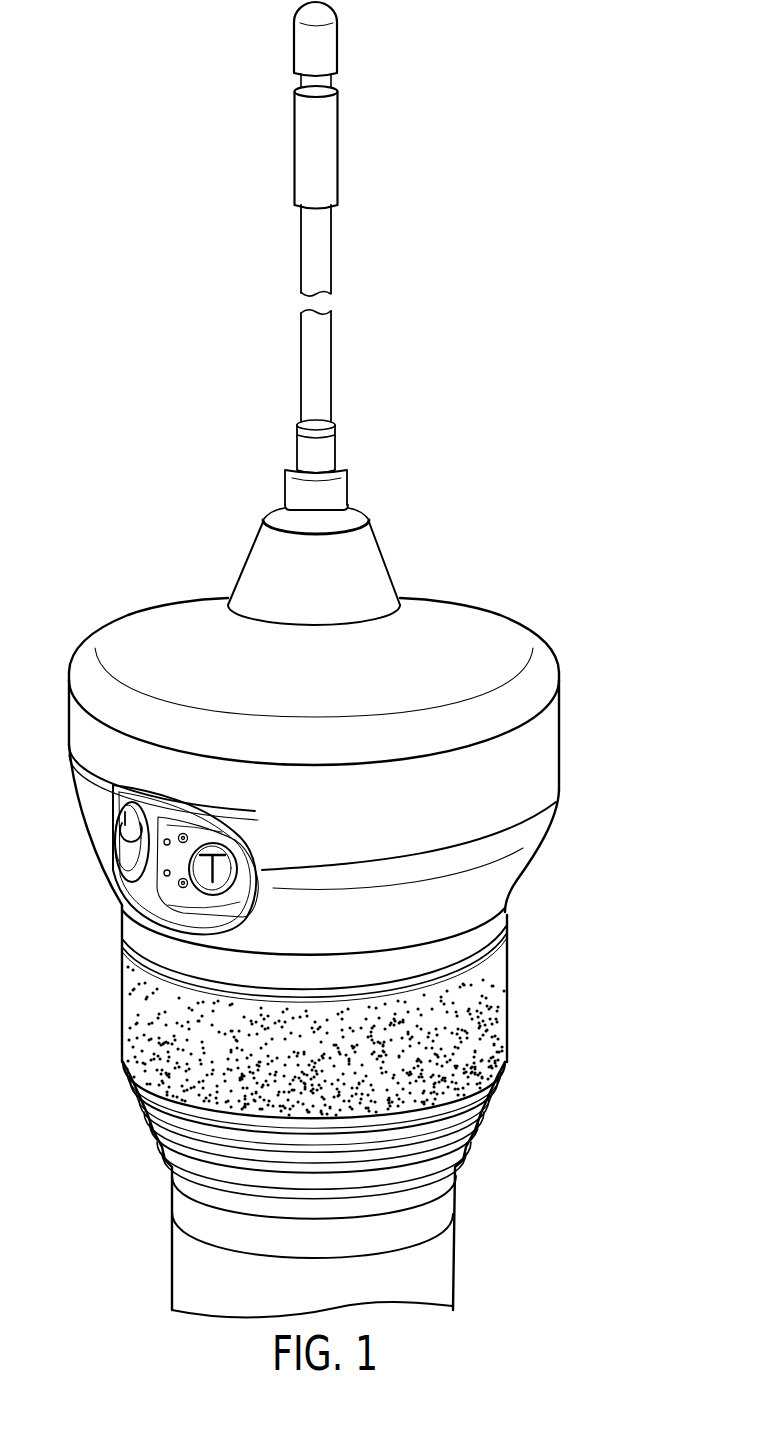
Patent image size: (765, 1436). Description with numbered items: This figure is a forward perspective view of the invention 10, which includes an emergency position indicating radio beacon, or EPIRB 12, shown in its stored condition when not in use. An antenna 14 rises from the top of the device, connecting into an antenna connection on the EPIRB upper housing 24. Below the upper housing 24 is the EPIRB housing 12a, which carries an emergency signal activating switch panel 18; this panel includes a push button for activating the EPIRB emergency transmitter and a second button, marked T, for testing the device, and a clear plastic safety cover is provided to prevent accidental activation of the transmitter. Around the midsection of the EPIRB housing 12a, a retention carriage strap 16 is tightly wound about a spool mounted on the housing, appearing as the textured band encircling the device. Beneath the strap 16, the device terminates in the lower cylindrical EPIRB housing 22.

The invention 10 is at (496, 437).
The emergency position indicating radio beacon (EPIRB) 12 is at (575, 736).
The EPIRB housing 12a is at (490, 926).
The antenna 14 is at (331, 362).
The retention carriage strap 16 is at (508, 996).
The emergency signal activating switch panel 18 is at (121, 889).
The lower cylindrical EPIRB housing 22 is at (455, 1262).
The EPIRB upper housing 24 is at (470, 628).